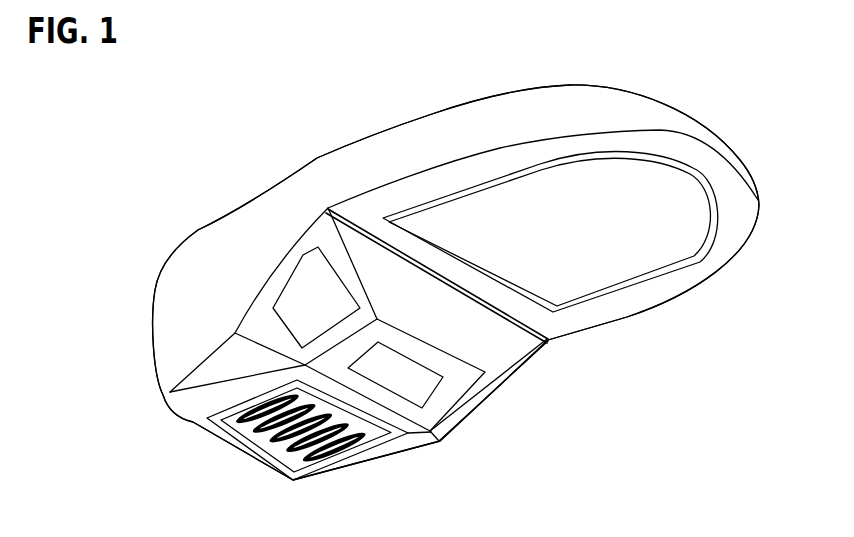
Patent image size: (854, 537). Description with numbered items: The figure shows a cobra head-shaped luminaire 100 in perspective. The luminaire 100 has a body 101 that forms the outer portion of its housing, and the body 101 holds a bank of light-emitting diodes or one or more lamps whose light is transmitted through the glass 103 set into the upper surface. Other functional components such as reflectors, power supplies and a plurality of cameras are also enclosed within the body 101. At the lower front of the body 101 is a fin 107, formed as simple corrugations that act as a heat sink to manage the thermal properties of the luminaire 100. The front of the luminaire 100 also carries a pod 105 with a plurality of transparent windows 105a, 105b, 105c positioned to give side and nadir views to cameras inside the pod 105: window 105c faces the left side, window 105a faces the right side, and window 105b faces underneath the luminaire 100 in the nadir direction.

The luminaire 100 is at (64, 88).
The body 101 is at (152, 295).
The glass 103 is at (550, 232).
The pod 105 is at (502, 343).
The window 105a is at (460, 410).
The window 105b is at (395, 375).
The window 105c is at (316, 297).
The fin 107 is at (267, 460).